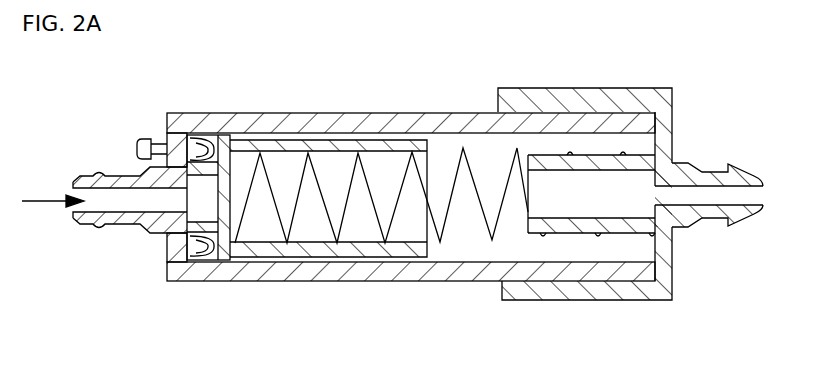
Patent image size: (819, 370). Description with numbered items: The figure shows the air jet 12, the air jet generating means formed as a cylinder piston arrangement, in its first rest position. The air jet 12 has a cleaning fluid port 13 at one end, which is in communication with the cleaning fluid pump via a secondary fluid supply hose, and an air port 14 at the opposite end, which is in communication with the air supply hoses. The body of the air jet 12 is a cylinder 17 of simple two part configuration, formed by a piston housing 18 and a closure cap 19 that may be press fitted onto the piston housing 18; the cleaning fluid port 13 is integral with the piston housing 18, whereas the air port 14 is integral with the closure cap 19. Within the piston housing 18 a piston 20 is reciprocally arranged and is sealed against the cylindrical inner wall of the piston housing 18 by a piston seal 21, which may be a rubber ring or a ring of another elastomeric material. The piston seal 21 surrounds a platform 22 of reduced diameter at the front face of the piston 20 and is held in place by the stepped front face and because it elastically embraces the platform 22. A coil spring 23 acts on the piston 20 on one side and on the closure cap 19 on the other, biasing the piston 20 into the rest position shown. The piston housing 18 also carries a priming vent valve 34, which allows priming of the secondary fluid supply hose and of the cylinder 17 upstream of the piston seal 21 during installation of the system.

The air jet 12 is at (411, 205).
The cleaning fluid port 13 is at (85, 180).
The air port 14 is at (740, 167).
The cylinder 17 is at (411, 205).
The piston housing 18 is at (343, 96).
The closure cap 19 is at (657, 90).
The piston 20 is at (240, 262).
The piston seal 21 is at (208, 275).
The platform 22 is at (220, 160).
The coil spring 23 is at (483, 190).
The priming vent valve 34 is at (152, 115).